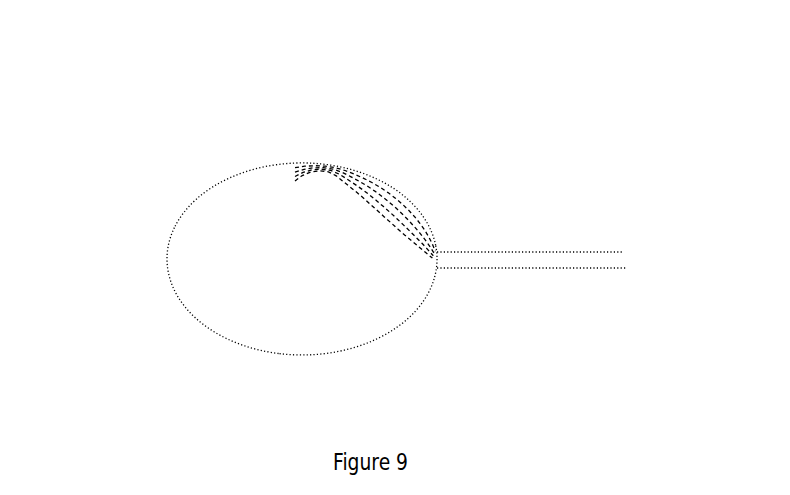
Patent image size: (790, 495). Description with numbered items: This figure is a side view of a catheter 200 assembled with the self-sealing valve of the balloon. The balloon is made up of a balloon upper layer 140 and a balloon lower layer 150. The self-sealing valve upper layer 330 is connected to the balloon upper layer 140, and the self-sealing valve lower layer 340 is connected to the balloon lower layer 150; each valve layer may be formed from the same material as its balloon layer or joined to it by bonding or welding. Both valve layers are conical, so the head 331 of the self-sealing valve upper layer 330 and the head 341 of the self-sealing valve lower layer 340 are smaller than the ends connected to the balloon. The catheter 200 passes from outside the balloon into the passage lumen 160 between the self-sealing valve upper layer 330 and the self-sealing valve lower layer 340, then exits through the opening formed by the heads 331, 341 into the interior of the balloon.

The balloon upper layer 140 is at (172, 222).
The balloon lower layer 150 is at (192, 317).
The passage lumen 160 is at (450, 281).
The catheter 200 is at (548, 242).
The self-sealing valve upper layer 330 is at (418, 207).
The head of the self-sealing valve upper layer 331 is at (322, 163).
The self-sealing valve lower layer 340 is at (392, 242).
The head of the self-sealing valve lower layer 341 is at (315, 182).